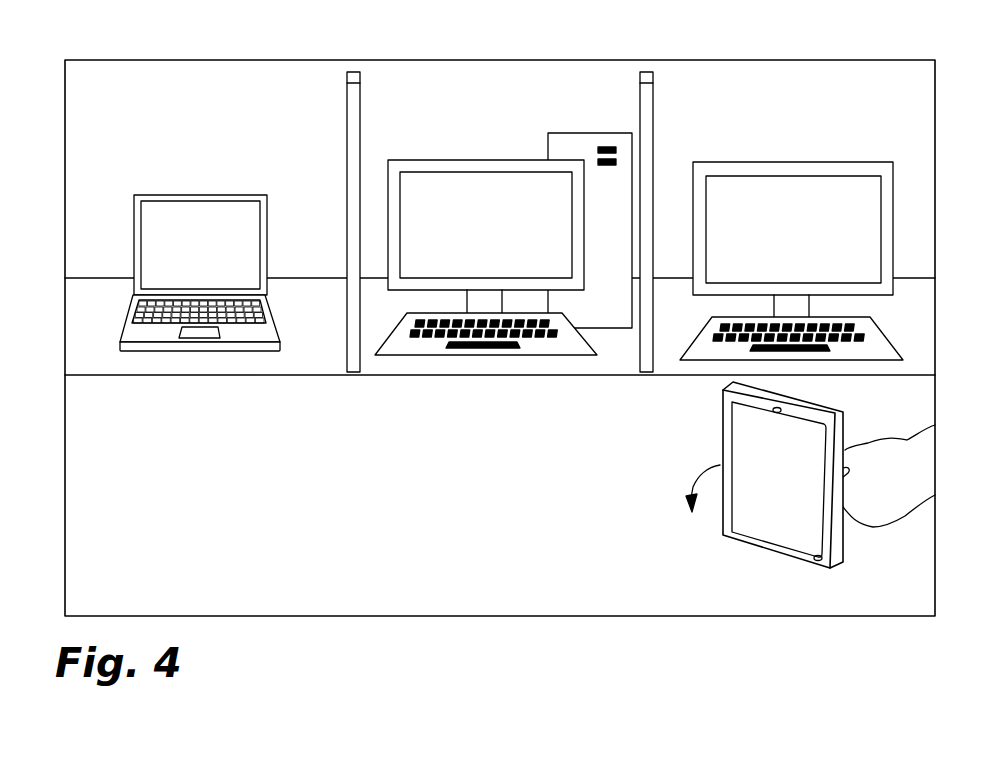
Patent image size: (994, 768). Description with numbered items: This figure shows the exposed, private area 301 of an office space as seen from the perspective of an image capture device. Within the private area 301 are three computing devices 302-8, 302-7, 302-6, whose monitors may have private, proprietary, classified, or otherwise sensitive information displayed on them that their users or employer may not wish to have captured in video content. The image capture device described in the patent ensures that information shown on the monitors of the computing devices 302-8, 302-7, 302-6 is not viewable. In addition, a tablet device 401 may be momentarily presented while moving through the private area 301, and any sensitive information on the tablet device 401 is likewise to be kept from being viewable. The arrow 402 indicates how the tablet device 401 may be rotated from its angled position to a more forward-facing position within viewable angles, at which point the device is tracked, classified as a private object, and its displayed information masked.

The private area 301 is at (173, 450).
The computing device 302-8 is at (203, 218).
The computing device 302-7 is at (492, 218).
The computing device 302-6 is at (753, 219).
The tablet device 401 is at (747, 477).
The arrow 402 is at (693, 483).